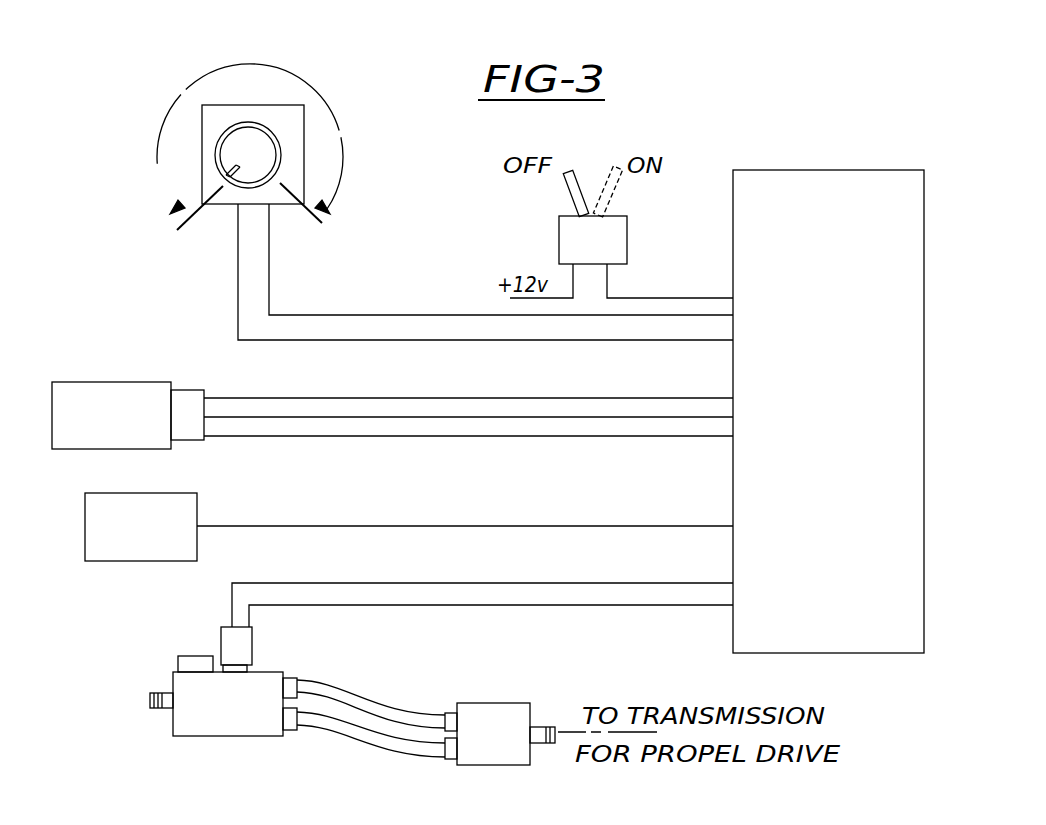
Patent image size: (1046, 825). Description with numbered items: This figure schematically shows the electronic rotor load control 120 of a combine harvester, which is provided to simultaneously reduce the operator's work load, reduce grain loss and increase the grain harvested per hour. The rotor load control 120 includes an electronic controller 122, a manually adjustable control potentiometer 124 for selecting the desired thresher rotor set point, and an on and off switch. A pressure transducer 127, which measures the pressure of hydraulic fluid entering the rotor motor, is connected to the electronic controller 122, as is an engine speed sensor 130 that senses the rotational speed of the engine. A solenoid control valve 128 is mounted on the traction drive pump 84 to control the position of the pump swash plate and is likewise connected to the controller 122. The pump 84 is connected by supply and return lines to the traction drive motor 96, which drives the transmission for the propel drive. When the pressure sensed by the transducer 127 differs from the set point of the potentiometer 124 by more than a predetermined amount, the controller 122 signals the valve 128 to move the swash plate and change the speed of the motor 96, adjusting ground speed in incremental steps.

The electronic rotor load control 120 is at (806, 148).
The manually adjustable control potentiometer 124 is at (287, 103).
The pressure transducer 127 is at (93, 382).
The engine speed sensor 130 is at (173, 493).
The electronic controller 122 is at (733, 619).
The solenoid control valve 128 is at (221, 642).
The traction drive pump 84 is at (167, 720).
The traction drive motor 96 is at (512, 703).